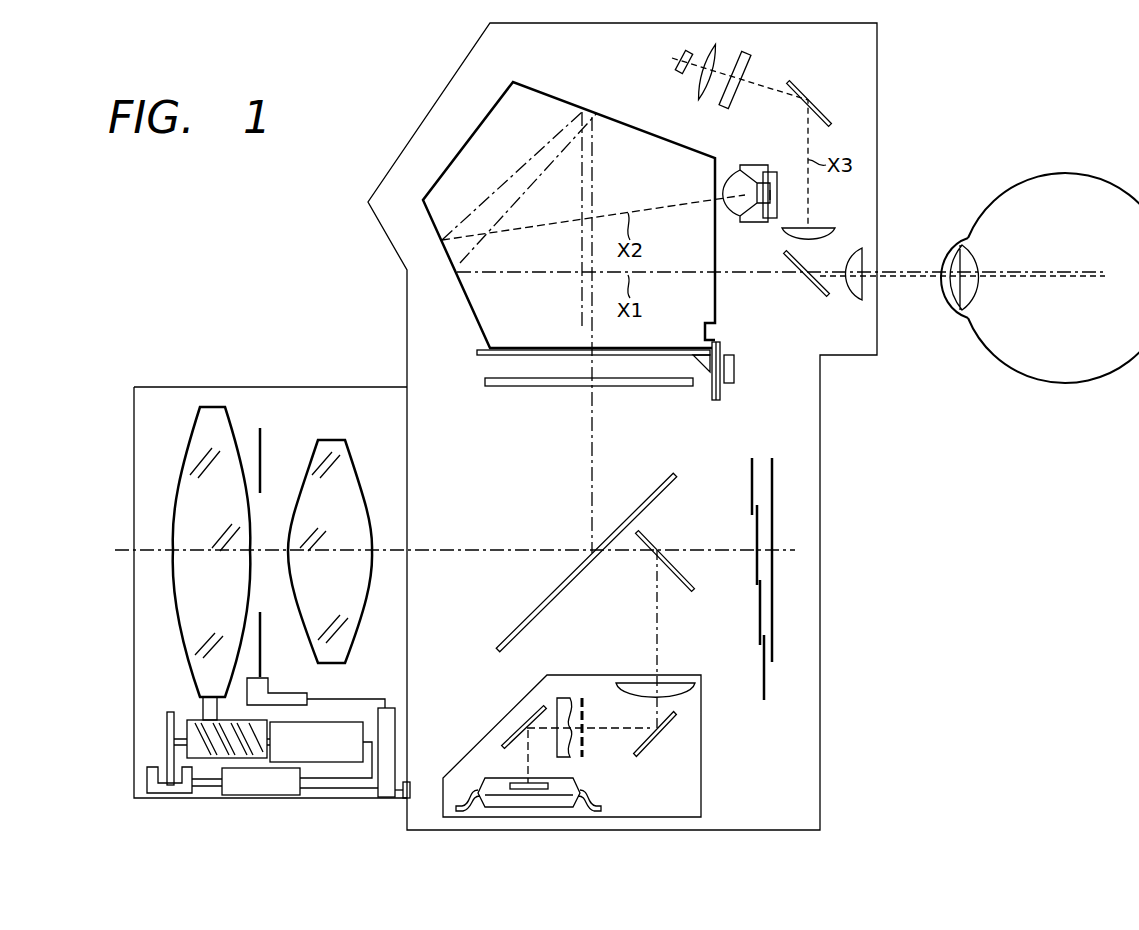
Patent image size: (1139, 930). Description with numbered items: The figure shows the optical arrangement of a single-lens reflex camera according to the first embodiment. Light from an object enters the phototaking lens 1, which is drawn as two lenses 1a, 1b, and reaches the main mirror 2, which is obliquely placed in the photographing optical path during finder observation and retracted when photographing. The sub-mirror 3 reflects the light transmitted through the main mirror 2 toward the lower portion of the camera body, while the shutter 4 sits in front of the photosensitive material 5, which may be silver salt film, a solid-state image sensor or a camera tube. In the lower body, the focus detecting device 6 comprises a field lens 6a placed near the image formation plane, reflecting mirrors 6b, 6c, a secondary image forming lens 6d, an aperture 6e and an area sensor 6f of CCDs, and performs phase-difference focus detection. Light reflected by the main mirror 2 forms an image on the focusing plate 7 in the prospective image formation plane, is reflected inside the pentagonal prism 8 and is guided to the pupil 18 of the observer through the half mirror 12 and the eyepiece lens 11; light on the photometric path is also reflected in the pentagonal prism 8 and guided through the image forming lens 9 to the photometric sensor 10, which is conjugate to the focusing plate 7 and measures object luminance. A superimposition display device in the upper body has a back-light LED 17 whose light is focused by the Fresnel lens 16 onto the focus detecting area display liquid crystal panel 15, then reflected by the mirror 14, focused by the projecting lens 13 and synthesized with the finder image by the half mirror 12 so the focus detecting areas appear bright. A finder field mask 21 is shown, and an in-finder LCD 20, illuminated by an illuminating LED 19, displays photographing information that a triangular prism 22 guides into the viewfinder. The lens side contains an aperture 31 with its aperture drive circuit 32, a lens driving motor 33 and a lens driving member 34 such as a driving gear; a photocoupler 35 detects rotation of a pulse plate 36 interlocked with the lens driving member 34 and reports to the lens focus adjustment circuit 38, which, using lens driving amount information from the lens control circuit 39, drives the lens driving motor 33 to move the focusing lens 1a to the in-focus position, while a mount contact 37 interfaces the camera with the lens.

The phototaking lens 1 is at (212, 394).
The focusing lens 1a is at (198, 447).
The lens 1b is at (355, 478).
The main mirror 2 is at (498, 648).
The sub-mirror 3 is at (694, 581).
The shutter 4 is at (752, 482).
The photosensitive material 5 is at (773, 622).
The focus detecting device 6 is at (701, 786).
The field lens 6a is at (686, 683).
The reflecting mirror 6b is at (640, 755).
The reflecting mirror 6c is at (510, 736).
The secondary image forming lens 6d is at (562, 698).
The aperture 6e is at (583, 698).
The area sensor 6f is at (575, 784).
The focusing plate 7 is at (662, 388).
The pentagonal prism 8 is at (458, 165).
The image forming lens 9 is at (736, 167).
The photometric sensor 10 is at (774, 172).
The eyepiece lens 11 is at (850, 297).
The half mirror 12 is at (802, 280).
The projecting lens 13 is at (814, 229).
The mirror 14 is at (806, 96).
The focus detecting area display liquid crystal panel 15 is at (746, 58).
The Fresnel lens 16 is at (698, 88).
The back-light LED 17 is at (676, 60).
The pupil 18 is at (1048, 185).
The illuminating LED 19 is at (735, 372).
The in-finder LCD 20 is at (718, 397).
The finder field mask 21 is at (488, 353).
The triangular prism 22 is at (702, 376).
The aperture 31 is at (262, 666).
The aperture drive circuit 32 is at (312, 694).
The lens driving motor 33 is at (333, 750).
The lens driving member 34 is at (190, 719).
The photocoupler 35 is at (178, 795).
The pulse plate 36 is at (165, 745).
The mount contact 37 is at (408, 782).
The lens focus adjustment circuit 38 is at (258, 796).
The lens control circuit 39 is at (386, 790).